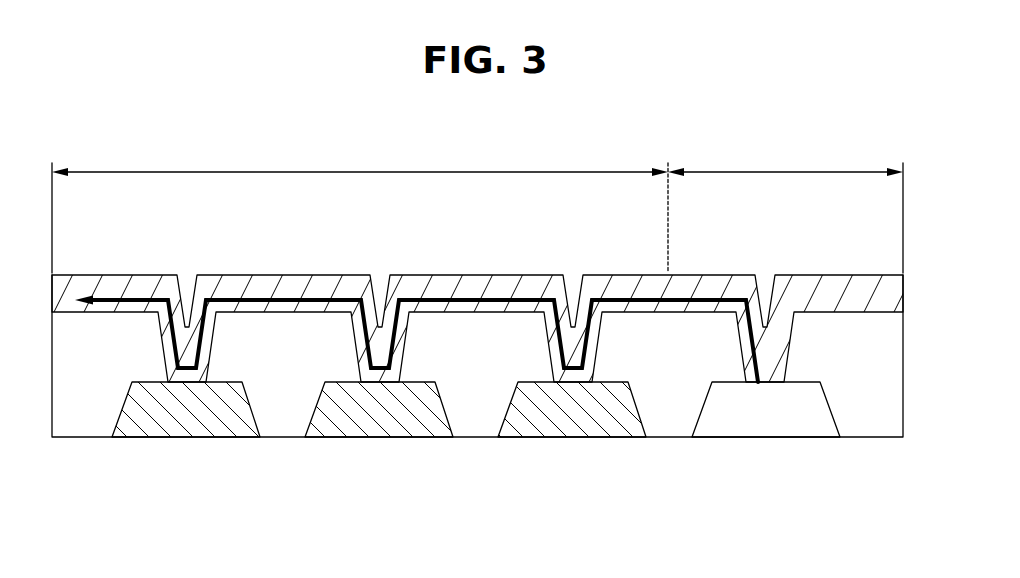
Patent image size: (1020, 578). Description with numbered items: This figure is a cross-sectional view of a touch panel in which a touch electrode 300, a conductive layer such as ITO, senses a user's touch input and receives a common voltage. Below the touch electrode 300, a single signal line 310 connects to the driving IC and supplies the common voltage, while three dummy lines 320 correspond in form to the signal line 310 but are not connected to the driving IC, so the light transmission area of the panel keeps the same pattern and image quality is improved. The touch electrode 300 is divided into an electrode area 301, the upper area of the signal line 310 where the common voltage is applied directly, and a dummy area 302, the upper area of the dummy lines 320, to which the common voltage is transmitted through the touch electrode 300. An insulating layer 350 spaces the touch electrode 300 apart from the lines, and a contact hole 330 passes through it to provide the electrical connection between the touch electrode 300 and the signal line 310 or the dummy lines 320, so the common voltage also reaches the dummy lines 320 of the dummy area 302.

The touch electrode 300 is at (843, 285).
The electrode area 301 is at (785, 207).
The dummy area 302 is at (360, 207).
The signal line 310 is at (768, 420).
The dummy line 320 is at (210, 418).
The contact hole 330 is at (153, 348).
The insulating layer 350 is at (862, 400).